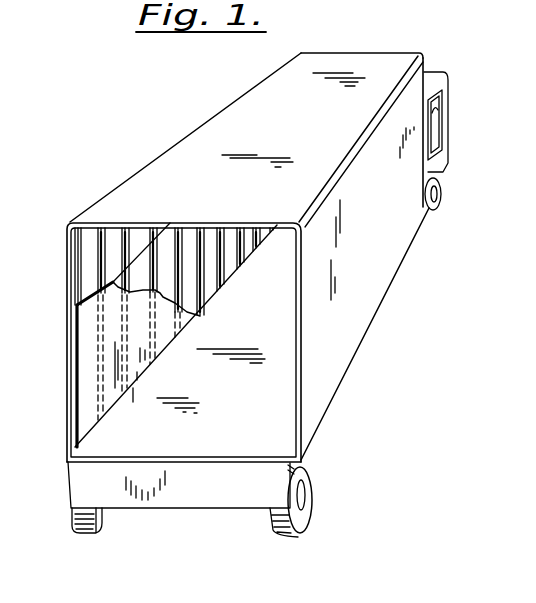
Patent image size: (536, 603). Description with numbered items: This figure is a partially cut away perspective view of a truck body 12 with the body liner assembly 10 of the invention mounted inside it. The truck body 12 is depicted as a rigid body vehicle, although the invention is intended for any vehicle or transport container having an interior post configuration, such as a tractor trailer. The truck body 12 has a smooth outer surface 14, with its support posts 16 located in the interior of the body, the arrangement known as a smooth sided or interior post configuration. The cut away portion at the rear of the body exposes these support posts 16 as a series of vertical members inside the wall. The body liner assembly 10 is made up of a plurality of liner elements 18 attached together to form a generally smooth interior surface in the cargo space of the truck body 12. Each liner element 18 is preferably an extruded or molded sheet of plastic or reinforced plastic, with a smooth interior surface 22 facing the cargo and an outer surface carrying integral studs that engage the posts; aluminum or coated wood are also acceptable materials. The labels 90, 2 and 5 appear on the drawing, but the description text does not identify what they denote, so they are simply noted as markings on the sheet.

The body liner assembly 10 is at (163, 338).
The truck body 12 is at (271, 100).
The smooth outer surface 14 is at (341, 325).
The support posts 16 is at (77, 258).
The liner element 18 is at (80, 299).
The smooth interior surface 22 is at (139, 367).
The rear door panel 90 is at (263, 407).
The section line 2- 2 is at (93, 315).
The section line 5- 5 is at (109, 300).